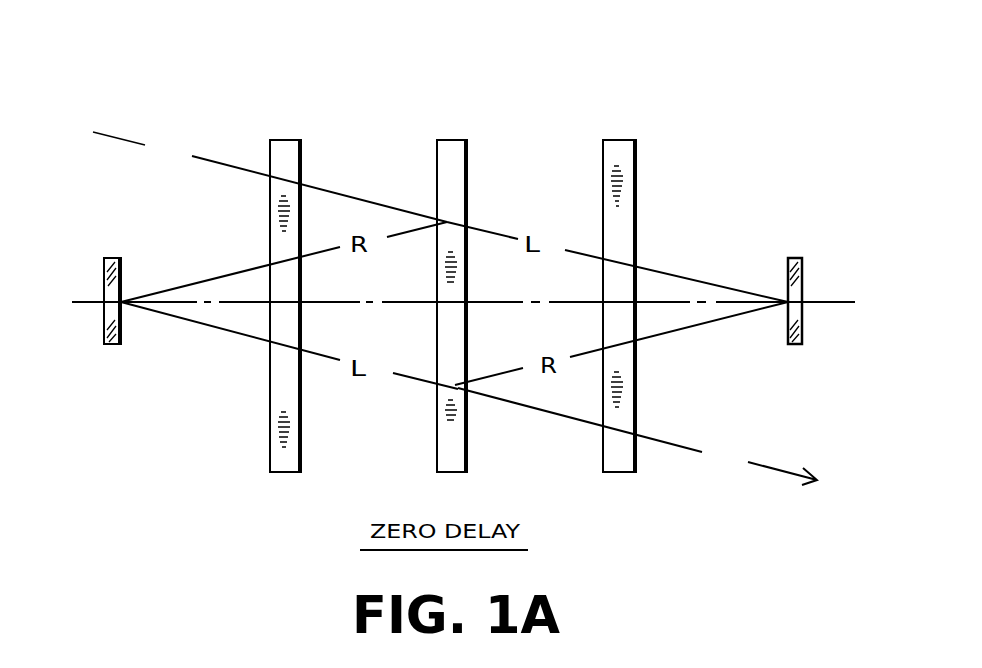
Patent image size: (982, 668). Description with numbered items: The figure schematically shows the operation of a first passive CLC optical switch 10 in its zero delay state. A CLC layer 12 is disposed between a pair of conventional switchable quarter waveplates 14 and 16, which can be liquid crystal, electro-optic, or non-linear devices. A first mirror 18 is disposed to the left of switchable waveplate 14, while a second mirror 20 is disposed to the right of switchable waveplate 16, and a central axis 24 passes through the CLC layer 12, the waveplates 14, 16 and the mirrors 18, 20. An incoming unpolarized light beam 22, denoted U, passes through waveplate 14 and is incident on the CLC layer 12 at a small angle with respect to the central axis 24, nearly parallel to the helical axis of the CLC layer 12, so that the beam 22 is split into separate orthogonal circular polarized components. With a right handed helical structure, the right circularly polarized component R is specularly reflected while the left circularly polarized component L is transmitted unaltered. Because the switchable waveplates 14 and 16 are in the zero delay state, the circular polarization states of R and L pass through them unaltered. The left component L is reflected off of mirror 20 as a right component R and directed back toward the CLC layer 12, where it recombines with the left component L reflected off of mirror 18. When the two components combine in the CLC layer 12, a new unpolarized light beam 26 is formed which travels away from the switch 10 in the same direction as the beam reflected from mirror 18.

The CLC optical switch 10 is at (805, 195).
The CLC layer 12 is at (449, 139).
The switchable quarter waveplate 14 is at (282, 140).
The switchable quarter waveplate 16 is at (609, 139).
The first mirror 18 is at (113, 346).
The second mirror 20 is at (790, 347).
The light beam 22 is at (243, 171).
The central axis 24 is at (813, 299).
The unpolarized light beam 26 is at (782, 472).